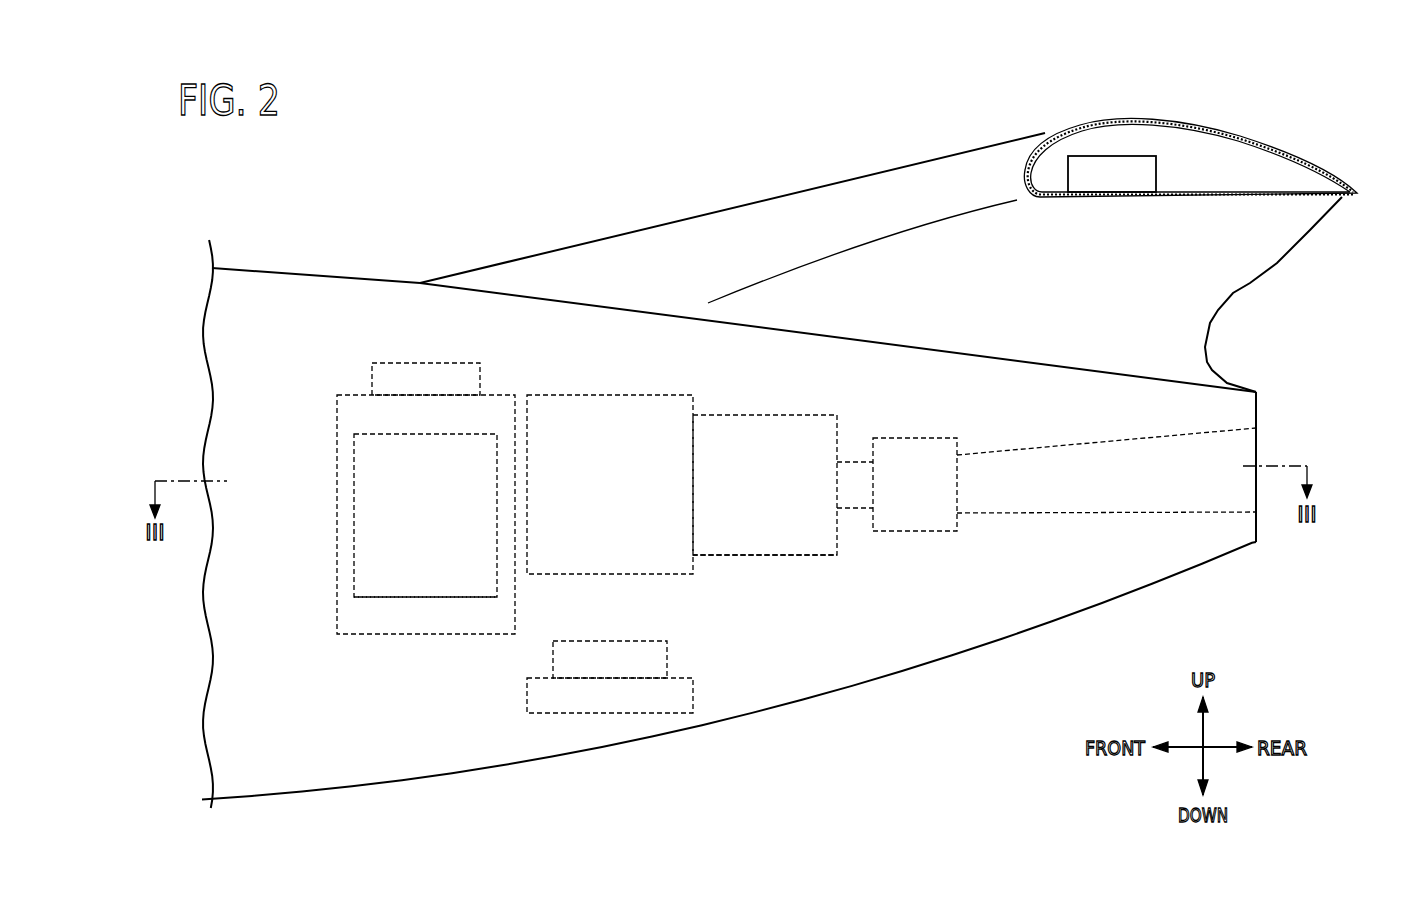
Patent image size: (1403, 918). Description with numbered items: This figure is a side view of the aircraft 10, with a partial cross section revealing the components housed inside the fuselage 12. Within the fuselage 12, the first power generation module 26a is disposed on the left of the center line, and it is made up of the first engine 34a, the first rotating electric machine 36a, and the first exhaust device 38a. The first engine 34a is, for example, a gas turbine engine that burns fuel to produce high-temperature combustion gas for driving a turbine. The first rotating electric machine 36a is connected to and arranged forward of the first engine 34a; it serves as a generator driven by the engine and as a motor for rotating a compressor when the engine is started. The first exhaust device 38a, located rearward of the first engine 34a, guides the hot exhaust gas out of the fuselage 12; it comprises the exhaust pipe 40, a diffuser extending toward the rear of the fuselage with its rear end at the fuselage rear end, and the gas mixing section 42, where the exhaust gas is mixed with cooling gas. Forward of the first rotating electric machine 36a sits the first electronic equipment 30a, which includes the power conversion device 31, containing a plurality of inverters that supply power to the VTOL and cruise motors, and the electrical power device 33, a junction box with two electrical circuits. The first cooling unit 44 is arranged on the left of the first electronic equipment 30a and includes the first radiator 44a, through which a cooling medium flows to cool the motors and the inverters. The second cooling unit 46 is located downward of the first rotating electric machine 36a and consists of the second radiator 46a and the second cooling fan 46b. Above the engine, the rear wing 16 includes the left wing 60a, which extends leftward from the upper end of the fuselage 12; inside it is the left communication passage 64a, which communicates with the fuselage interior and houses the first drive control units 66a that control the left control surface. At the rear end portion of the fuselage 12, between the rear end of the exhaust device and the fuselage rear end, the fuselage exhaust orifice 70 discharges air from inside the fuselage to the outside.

The aircraft 10 is at (310, 170).
The fuselage 12 is at (327, 787).
The rear wing 16 is at (736, 206).
The first power generation module 26a is at (785, 556).
The first electronic equipment 30a is at (365, 635).
The power conversion device 31 is at (394, 363).
The electrical power device 33 is at (355, 419).
The first engine 34a is at (753, 435).
The first rotating electric machine 36a is at (628, 395).
The first exhaust device 38a is at (1057, 514).
The exhaust pipe 40 is at (1033, 457).
The gas mixing section 42 is at (927, 533).
The first cooling unit 44 is at (355, 520).
The first radiator 44a is at (437, 597).
The second cooling unit 46 is at (665, 812).
The second radiator 46a is at (630, 705).
The second cooling fan 46b is at (590, 662).
The left wing 60a is at (1260, 140).
The left communication passage 64a is at (1182, 152).
The first drive control units 66a is at (1098, 167).
The fuselage exhaust orifice 70 is at (1257, 528).